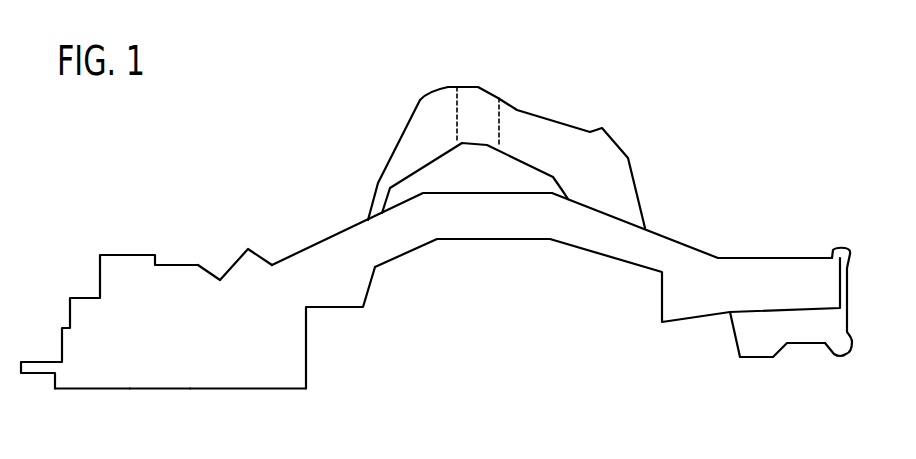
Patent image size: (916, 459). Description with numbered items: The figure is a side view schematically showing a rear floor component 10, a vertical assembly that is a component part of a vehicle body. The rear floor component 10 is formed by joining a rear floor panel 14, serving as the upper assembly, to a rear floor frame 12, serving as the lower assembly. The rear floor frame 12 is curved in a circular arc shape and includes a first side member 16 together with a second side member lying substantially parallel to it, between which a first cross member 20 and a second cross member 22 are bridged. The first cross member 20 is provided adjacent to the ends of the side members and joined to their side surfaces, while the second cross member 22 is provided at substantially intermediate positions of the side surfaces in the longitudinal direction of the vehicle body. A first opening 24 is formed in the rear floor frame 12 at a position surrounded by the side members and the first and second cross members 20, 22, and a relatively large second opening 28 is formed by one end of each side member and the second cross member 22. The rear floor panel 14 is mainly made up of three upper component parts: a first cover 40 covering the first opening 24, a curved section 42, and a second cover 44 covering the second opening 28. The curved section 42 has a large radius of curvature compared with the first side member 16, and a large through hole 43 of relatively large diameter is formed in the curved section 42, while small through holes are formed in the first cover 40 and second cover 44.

The rear floor component 10 is at (814, 112).
The rear floor frame 12 is at (103, 241).
The rear floor panel 14 is at (617, 119).
The first side member 16 is at (167, 378).
The first cross member 20 is at (108, 370).
The second cross member 22 is at (395, 240).
The first opening 24 is at (203, 388).
The second opening 28 is at (780, 312).
The first cover 40 is at (193, 264).
The curved section 42 is at (537, 122).
The large through hole 43 is at (475, 102).
The second cover 44 is at (835, 328).